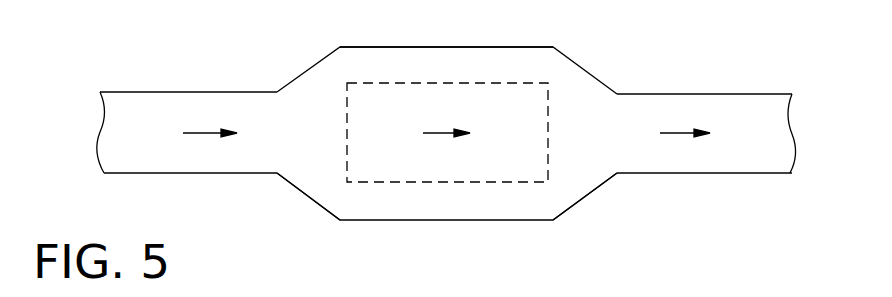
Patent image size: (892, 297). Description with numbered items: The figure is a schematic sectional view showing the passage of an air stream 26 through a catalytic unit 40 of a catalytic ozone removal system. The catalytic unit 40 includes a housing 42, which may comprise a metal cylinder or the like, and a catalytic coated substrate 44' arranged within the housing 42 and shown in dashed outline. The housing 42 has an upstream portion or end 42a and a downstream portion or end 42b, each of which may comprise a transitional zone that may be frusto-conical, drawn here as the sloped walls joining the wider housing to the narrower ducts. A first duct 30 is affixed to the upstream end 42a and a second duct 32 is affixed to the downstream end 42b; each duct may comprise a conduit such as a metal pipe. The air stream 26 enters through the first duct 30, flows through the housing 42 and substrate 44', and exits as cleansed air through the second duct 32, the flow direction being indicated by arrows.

The air stream 26 is at (195, 129).
The first duct 30 is at (198, 92).
The second duct 32 is at (717, 94).
The catalytic unit 40 is at (586, 56).
The housing 42 is at (357, 47).
The upstream portion or end 42a is at (295, 206).
The downstream portion or end 42b is at (598, 207).
The catalytic coated substrate 44' is at (513, 118).